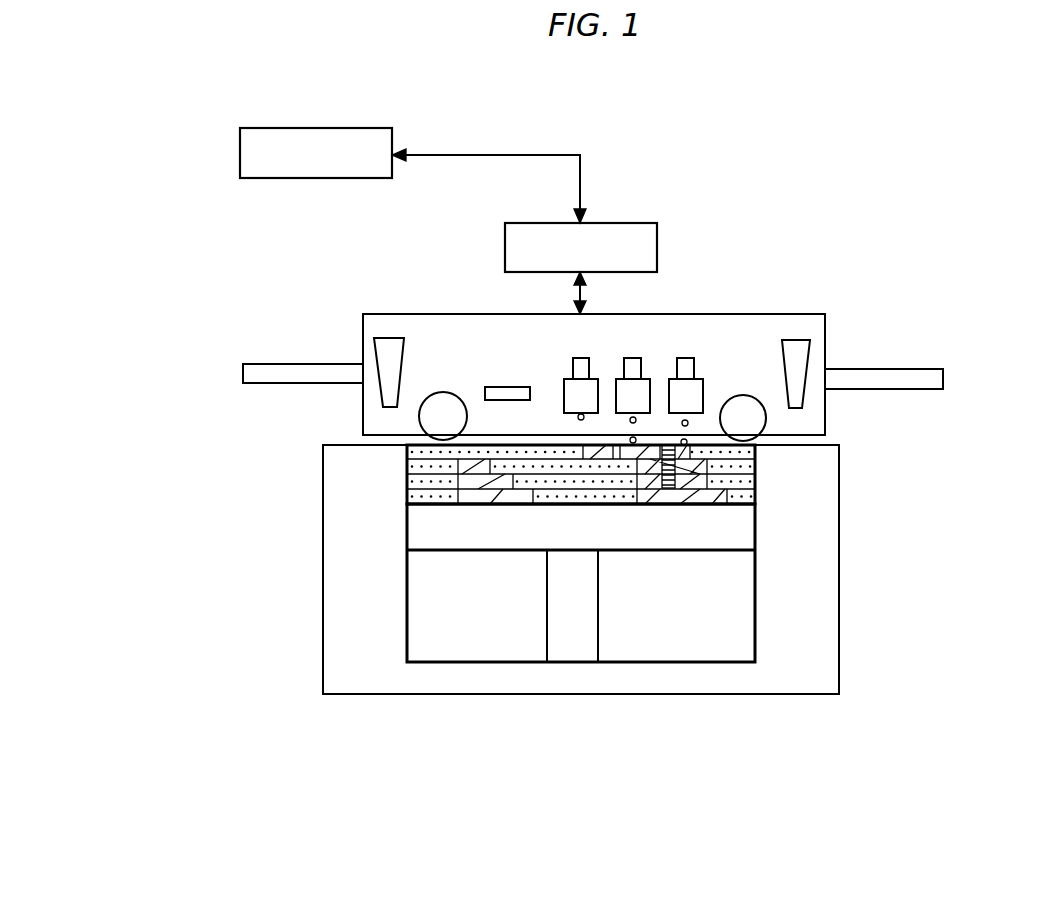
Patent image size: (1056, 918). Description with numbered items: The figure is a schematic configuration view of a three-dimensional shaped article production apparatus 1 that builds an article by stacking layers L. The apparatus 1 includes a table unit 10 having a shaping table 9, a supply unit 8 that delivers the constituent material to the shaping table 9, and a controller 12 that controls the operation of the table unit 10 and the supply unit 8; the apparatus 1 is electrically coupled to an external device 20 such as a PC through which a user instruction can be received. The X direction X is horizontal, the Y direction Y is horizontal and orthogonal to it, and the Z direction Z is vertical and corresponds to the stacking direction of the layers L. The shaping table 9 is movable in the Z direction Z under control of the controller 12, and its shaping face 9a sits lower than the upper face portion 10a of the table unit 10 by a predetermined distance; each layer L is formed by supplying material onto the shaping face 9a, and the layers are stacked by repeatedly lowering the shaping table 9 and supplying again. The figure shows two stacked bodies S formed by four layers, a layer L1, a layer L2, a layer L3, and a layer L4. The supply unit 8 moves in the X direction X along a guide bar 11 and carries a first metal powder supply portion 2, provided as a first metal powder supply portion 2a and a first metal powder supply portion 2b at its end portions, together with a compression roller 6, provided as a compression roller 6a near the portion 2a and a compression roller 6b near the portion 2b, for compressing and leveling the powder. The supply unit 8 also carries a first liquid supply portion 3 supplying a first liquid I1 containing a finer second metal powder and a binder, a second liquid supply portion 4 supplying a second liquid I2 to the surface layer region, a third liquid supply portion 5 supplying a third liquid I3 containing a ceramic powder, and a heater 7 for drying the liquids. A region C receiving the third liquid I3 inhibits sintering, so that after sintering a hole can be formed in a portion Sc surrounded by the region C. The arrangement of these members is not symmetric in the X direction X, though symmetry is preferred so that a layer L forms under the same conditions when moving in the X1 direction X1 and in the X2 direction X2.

The three-dimensional shaped article production apparatus 1 is at (972, 311).
The first metal powder supply portion 2 is at (592, 327).
The first metal powder supply portion 2a is at (796, 340).
The first metal powder supply portion 2b is at (378, 338).
The first liquid supply portion 3 is at (635, 358).
The second liquid supply portion 4 is at (686, 358).
The third liquid supply portion 5 is at (583, 358).
The compression roller 6 is at (520, 353).
The compression roller 6a is at (742, 395).
The compression roller 6b is at (418, 417).
The heater 7 is at (510, 387).
The supply unit 8 is at (442, 314).
The shaping table 9 is at (443, 533).
The shaping face 9a is at (427, 499).
The table unit 10 is at (323, 507).
The upper face portion 10a is at (360, 434).
The guide bar 11 is at (880, 368).
The controller 12 is at (642, 223).
The external device 20 is at (288, 128).
The layer L is at (562, 611).
The layer L1 is at (407, 497).
The layer L2 is at (407, 483).
The layer L3 is at (407, 466).
The layer L4 is at (407, 447).
The first liquid I1 is at (630, 420).
The second liquid I2 is at (682, 423).
The third liquid I3 is at (578, 417).
The stacked body S is at (683, 465).
The portion Sc is at (650, 470).
The region C is at (700, 455).
The X direction X is at (612, 830).
The X1 direction X1 is at (724, 830).
The X2 direction X2 is at (488, 830).
The Y direction Y is at (927, 593).
The Z direction Z is at (202, 573).